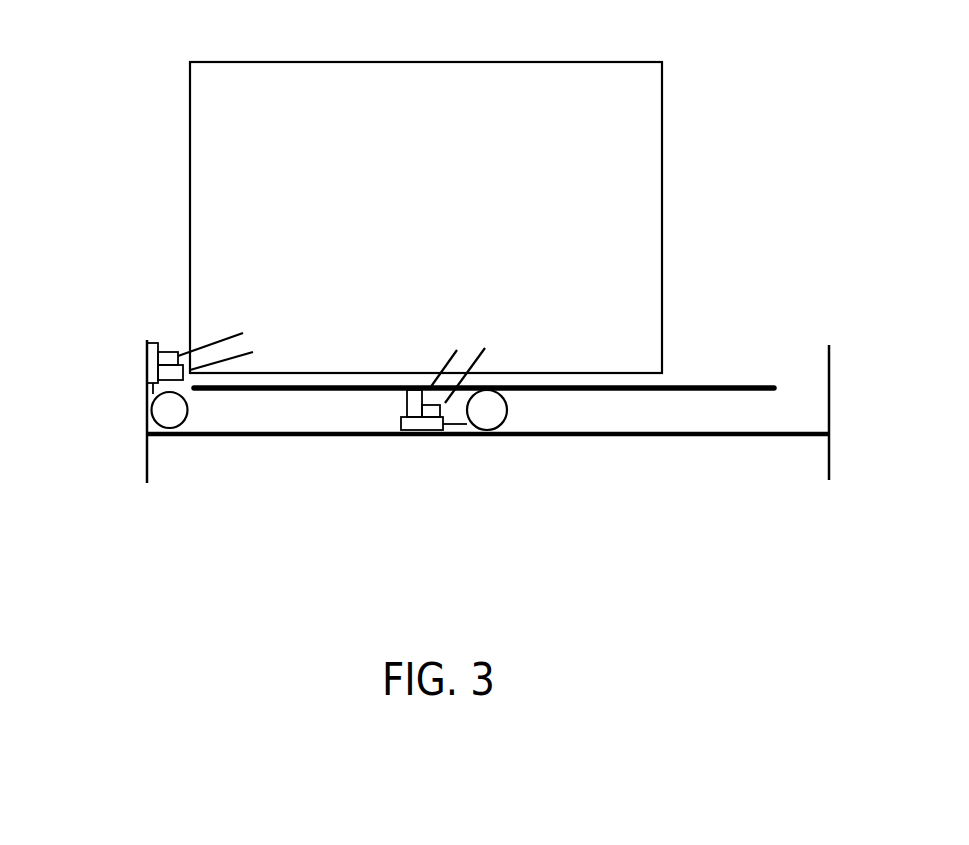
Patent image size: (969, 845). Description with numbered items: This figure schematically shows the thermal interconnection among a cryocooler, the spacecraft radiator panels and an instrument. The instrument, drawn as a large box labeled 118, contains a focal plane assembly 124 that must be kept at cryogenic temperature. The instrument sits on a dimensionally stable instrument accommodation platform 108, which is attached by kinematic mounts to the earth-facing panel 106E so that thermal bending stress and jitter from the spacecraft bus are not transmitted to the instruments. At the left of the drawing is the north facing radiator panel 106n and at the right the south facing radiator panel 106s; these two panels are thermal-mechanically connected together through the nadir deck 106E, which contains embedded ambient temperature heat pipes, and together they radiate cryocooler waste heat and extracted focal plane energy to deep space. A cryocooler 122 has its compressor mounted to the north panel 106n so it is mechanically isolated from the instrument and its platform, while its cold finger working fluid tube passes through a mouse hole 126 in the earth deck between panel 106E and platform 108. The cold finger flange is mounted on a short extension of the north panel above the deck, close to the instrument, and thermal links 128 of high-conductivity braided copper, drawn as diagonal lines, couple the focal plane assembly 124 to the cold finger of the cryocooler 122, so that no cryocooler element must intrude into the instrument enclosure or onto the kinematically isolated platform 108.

The instrument enclosure 118 is at (442, 62).
The focal plane assembly 124 is at (317, 112).
The thermal link 128 is at (443, 355).
The cryocooler 122 is at (147, 355).
The mouse hole 126 is at (192, 395).
The instrument accommodation platform 108 is at (302, 390).
The earth-facing panel 106E is at (360, 440).
The north facing thermal radiator panel 106n is at (142, 342).
The south facing thermal radiator panel 106s is at (837, 345).